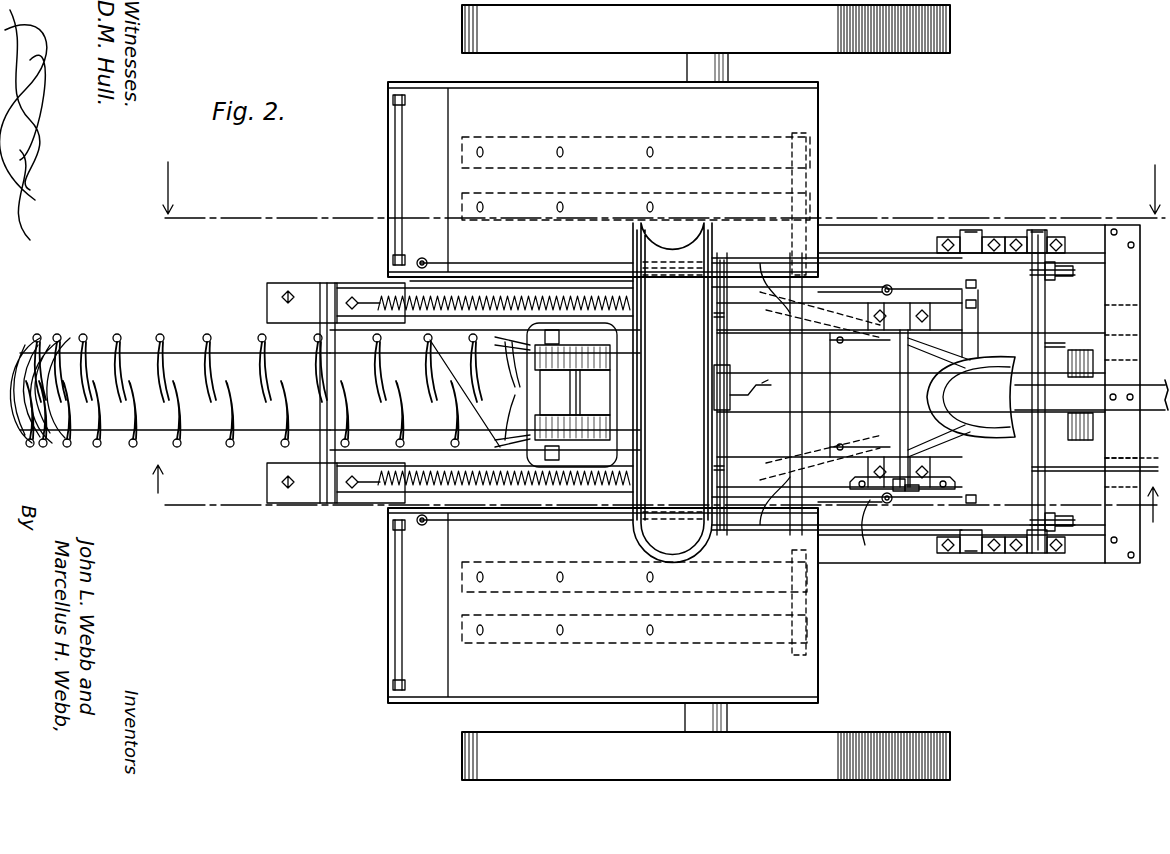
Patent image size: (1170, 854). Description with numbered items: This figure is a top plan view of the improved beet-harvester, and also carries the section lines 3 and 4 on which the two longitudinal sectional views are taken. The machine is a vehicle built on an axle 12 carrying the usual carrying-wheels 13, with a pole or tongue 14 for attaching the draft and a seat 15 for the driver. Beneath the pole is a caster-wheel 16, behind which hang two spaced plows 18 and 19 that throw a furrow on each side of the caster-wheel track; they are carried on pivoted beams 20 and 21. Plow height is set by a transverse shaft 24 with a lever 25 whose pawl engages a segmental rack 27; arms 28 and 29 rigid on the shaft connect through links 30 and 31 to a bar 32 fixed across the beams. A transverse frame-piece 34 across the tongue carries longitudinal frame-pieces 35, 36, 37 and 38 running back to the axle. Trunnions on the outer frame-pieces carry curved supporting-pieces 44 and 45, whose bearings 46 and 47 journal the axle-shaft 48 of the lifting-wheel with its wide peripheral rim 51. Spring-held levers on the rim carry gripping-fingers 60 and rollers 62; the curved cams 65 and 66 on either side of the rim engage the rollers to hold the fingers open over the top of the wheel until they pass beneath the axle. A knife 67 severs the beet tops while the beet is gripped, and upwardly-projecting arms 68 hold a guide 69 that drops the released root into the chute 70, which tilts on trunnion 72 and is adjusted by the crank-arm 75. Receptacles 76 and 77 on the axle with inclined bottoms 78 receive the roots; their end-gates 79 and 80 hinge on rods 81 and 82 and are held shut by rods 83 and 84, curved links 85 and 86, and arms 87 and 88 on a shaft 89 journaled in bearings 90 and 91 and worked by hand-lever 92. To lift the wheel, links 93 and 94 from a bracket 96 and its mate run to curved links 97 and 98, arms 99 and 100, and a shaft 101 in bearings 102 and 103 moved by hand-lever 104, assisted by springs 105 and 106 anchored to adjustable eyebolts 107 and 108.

The section line 3- 3 is at (658, 493).
The section line 4- 4 is at (651, 194).
The axle 12 is at (727, 718).
The carrying-wheels 13 is at (966, 749).
The pole or tongue 14 is at (1091, 394).
The seat 15 is at (971, 397).
The caster-wheel 16 is at (1090, 365).
The plow 18 is at (830, 515).
The plow 19 is at (822, 278).
The beam 20 is at (920, 437).
The beam 21 is at (928, 352).
The shaft 24 is at (898, 378).
The lever 25 is at (880, 528).
The segmental rack 27 is at (905, 490).
The arm 28 is at (855, 434).
The arm 29 is at (855, 353).
The link 30 is at (838, 445).
The link 31 is at (835, 340).
The bar 32 is at (824, 392).
The frame-piece 34 is at (1122, 394).
The longitudinal frame-piece 35 is at (1085, 235).
The longitudinal frame-piece 36 is at (1104, 335).
The longitudinal frame-piece 37 is at (1085, 513).
The longitudinal frame-piece 38 is at (1090, 555).
The curved supporting-piece 44 is at (492, 494).
The curved supporting-piece 45 is at (490, 277).
The bearing 46 is at (318, 500).
The bearing 47 is at (315, 290).
The axle-shaft 48 is at (305, 393).
The peripheral rim 51 is at (172, 350).
The gripping-fingers 60 is at (290, 380).
The rollers 62 is at (208, 460).
The curved cam or guide 65 is at (533, 463).
The curved cam or guide 66 is at (520, 335).
The knife 67 is at (506, 392).
The upwardly-projecting arms 68 is at (516, 391).
The guide 69 is at (583, 460).
The chute 70 is at (672, 393).
The trunnion 72 is at (745, 385).
The crank-arm 75 is at (758, 393).
The receptacle 76 is at (805, 690).
The receptacle 77 is at (802, 125).
The bottoms 78 is at (538, 698).
The end-gate 79 is at (390, 622).
The end-gate 80 is at (388, 160).
The rod 81 is at (403, 600).
The rod 82 is at (403, 162).
The rod 83 is at (730, 527).
The rod 84 is at (720, 265).
The curved link 85 is at (1020, 510).
The curved link 86 is at (1020, 237).
The arm 87 is at (1052, 515).
The arm 88 is at (1050, 275).
The shaft 89 is at (1057, 338).
The bearing 90 is at (1040, 555).
The bearing 91 is at (1040, 237).
The hand-lever 92 is at (1122, 480).
The link 93 is at (470, 490).
The link 94 is at (580, 280).
The bracket 96 is at (350, 516).
The curved link 97 is at (920, 490).
The curved link 98 is at (893, 293).
The arm 99 is at (978, 499).
The arm 100 is at (978, 286).
The shaft 101 is at (978, 306).
The bearing 102 is at (975, 555).
The bearing 103 is at (968, 235).
The hand-lever 104 is at (968, 310).
The spring 105 is at (440, 520).
The spring 106 is at (455, 275).
The eyebolt 107 is at (838, 472).
The eyebolt 108 is at (838, 316).